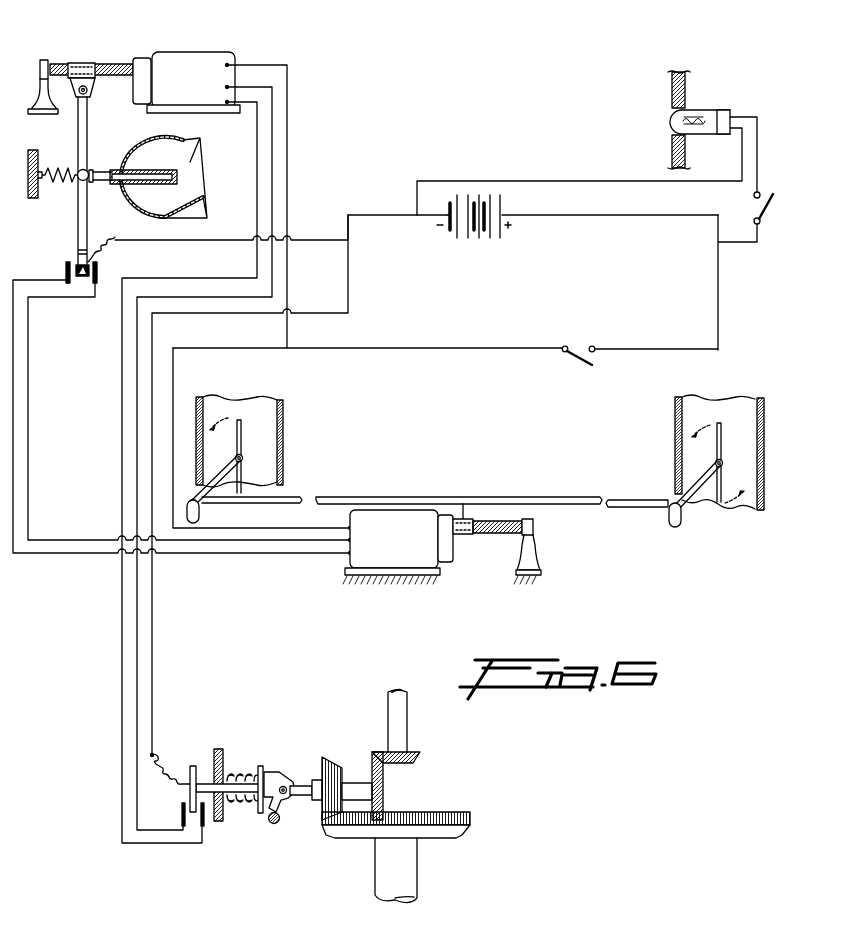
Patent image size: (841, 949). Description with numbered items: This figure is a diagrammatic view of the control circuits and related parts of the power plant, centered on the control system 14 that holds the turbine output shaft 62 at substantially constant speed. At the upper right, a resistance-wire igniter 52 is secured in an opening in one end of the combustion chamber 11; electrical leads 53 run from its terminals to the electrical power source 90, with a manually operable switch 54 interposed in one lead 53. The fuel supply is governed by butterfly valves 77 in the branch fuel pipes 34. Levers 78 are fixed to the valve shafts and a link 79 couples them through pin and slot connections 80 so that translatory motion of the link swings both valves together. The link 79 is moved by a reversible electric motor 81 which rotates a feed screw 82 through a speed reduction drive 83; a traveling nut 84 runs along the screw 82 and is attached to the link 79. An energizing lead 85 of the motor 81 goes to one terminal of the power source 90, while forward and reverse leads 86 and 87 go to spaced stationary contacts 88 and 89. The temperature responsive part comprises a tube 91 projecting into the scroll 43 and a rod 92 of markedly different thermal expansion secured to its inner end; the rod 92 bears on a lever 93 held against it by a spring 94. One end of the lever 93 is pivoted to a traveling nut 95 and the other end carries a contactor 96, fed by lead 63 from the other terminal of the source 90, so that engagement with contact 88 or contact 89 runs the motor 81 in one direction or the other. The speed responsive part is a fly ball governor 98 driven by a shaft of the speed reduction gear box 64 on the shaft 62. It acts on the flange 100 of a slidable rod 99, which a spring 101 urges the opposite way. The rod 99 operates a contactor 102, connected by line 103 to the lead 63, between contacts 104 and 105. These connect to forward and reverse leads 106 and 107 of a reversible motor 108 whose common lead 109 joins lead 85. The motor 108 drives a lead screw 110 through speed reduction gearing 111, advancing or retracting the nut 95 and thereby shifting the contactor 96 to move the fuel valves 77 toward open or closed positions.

The combustion chamber 11 is at (664, 148).
The control system 14 is at (232, 742).
The branch fuel pipes 34 is at (283, 477).
The scroll 43 is at (188, 160).
The igniter 52 is at (718, 110).
The electrical leads 53 is at (697, 185).
The manually operable switch 54 is at (765, 210).
The drive shaft 62 is at (403, 732).
The lead 63 is at (173, 240).
The speed reduction gear box 64 is at (410, 805).
The valves 77 is at (241, 440).
The levers 78 is at (213, 470).
The link 79 is at (547, 497).
The pin and slot connections 80 is at (672, 528).
The reversible electric motor 81 is at (395, 557).
The feed screw 82 is at (500, 534).
The speed reduction drive 83 is at (444, 562).
The traveling nut 84 is at (468, 520).
The energizing lead 85 is at (432, 348).
The forward lead 86 is at (60, 554).
The reverse lead 87 is at (68, 540).
The stationary contact 88 is at (66, 270).
The stationary contact 89 is at (97, 270).
The electrical power source 90 is at (493, 236).
The tube 91 is at (146, 170).
The rod 92 is at (100, 170).
The lever 93 is at (84, 203).
The spring 94 is at (56, 187).
The traveling nut 95 is at (90, 80).
The contactor 96 is at (81, 277).
The fly ball governor 98 is at (290, 777).
The slidable rod 99 is at (197, 785).
The flange 100 is at (271, 822).
The spring 101 is at (233, 773).
The contactor 102 is at (195, 788).
The line 103 is at (152, 665).
The contact 104 is at (208, 827).
The contact 105 is at (181, 820).
The forward lead 106 is at (122, 780).
The reverse lead 107 is at (137, 735).
The reversible motor 108 is at (238, 58).
The common energizing lead 109 is at (288, 185).
The lead screw 110 is at (108, 64).
The speed reduction gearing 111 is at (140, 103).